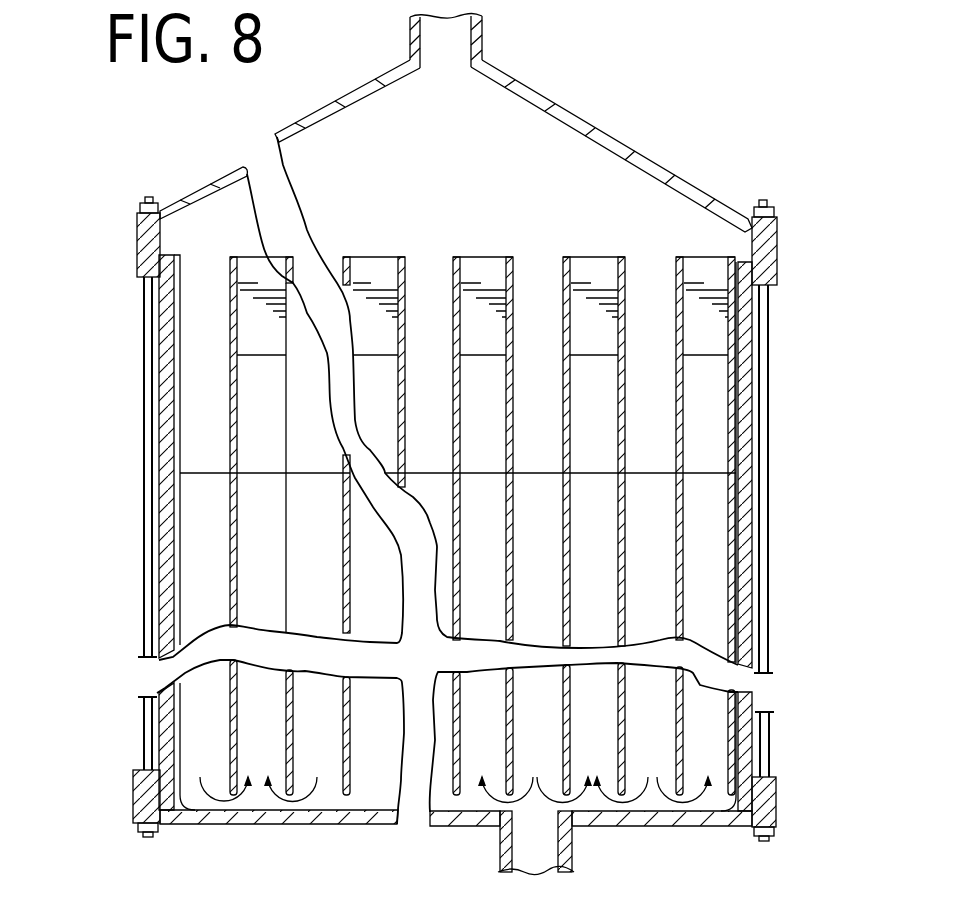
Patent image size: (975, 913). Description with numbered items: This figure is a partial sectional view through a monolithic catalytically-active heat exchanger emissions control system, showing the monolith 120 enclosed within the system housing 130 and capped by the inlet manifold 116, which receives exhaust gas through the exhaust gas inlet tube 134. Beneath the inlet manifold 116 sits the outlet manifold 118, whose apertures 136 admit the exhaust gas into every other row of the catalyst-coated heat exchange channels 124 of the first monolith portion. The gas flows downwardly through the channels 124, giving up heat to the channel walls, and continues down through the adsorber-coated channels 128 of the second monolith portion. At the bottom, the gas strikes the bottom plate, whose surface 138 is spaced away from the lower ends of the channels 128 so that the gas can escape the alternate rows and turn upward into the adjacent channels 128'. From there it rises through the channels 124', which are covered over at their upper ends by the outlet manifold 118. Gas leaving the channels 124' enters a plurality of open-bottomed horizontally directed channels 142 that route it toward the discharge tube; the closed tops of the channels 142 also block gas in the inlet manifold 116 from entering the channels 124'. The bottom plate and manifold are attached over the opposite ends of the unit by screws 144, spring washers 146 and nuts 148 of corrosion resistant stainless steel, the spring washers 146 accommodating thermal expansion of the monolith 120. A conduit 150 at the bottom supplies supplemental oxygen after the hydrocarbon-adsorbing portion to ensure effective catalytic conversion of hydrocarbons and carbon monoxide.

The inlet manifold 116 is at (530, 97).
The outlet manifold 118 is at (367, 273).
The monolithic catalytically-active heat exchanger 120 is at (738, 404).
The catalyst-coated heat exchange channels 124 is at (458, 510).
The channels 124' is at (483, 532).
The adsorber-coated channels 128 is at (423, 728).
The channels 128' is at (484, 726).
The system housing 130 is at (168, 423).
The exhaust gas inlet tube 134 is at (487, 58).
The outlet manifold apertures 136 is at (428, 268).
The surface 138 is at (633, 826).
The open-bottomed horizontally directed channels 142 is at (279, 417).
The screws 144 is at (145, 607).
The spring washers 146 is at (138, 213).
The nuts 148 is at (150, 197).
The conduit 150 is at (500, 848).